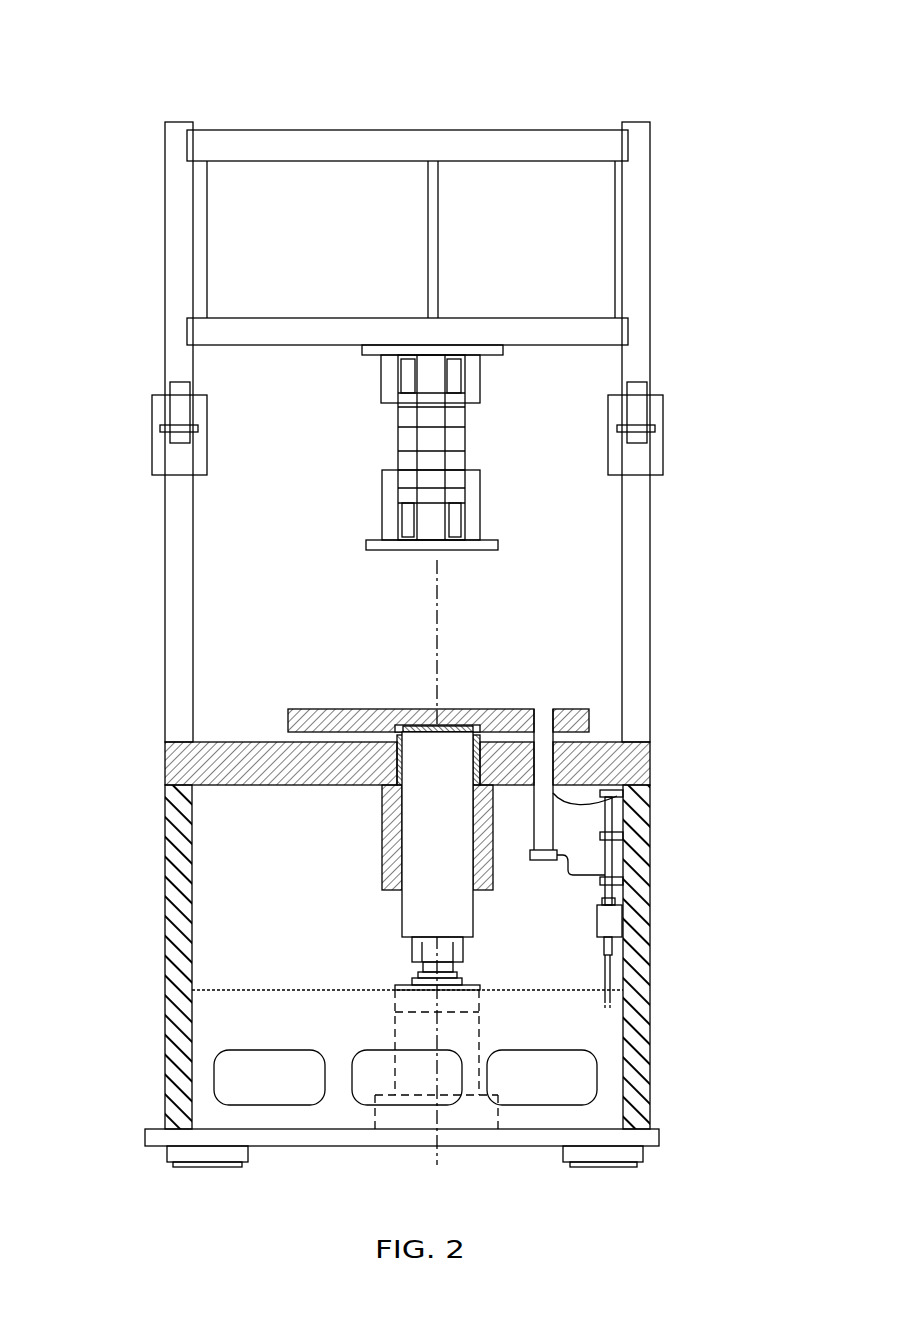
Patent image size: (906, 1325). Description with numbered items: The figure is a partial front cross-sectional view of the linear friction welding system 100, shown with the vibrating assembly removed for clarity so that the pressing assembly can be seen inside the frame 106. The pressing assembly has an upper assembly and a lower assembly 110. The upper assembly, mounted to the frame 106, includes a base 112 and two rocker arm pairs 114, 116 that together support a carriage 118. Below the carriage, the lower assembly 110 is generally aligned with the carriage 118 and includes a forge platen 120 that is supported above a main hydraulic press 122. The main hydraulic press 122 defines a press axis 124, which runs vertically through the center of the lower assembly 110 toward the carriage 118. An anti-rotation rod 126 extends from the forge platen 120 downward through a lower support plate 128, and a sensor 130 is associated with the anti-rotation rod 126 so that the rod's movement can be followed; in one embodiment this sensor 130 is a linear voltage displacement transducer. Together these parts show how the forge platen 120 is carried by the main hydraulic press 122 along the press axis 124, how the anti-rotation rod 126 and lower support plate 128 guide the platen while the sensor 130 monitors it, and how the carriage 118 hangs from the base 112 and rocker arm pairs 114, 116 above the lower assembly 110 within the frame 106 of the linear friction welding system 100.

The linear friction welding system 100 is at (86, 110).
The frame 106 is at (650, 178).
The lower assembly 110 is at (702, 975).
The base 112 is at (222, 345).
The rocker arm pair 114 is at (463, 440).
The rocker arm pair 116 is at (398, 428).
The carriage 118 is at (365, 540).
The forge platen 120 is at (335, 709).
The main hydraulic press 122 is at (418, 972).
The press axis 124 is at (438, 652).
The anti-rotation rod 126 is at (627, 782).
The lower support plate 128 is at (605, 742).
The sensor 130 is at (613, 860).